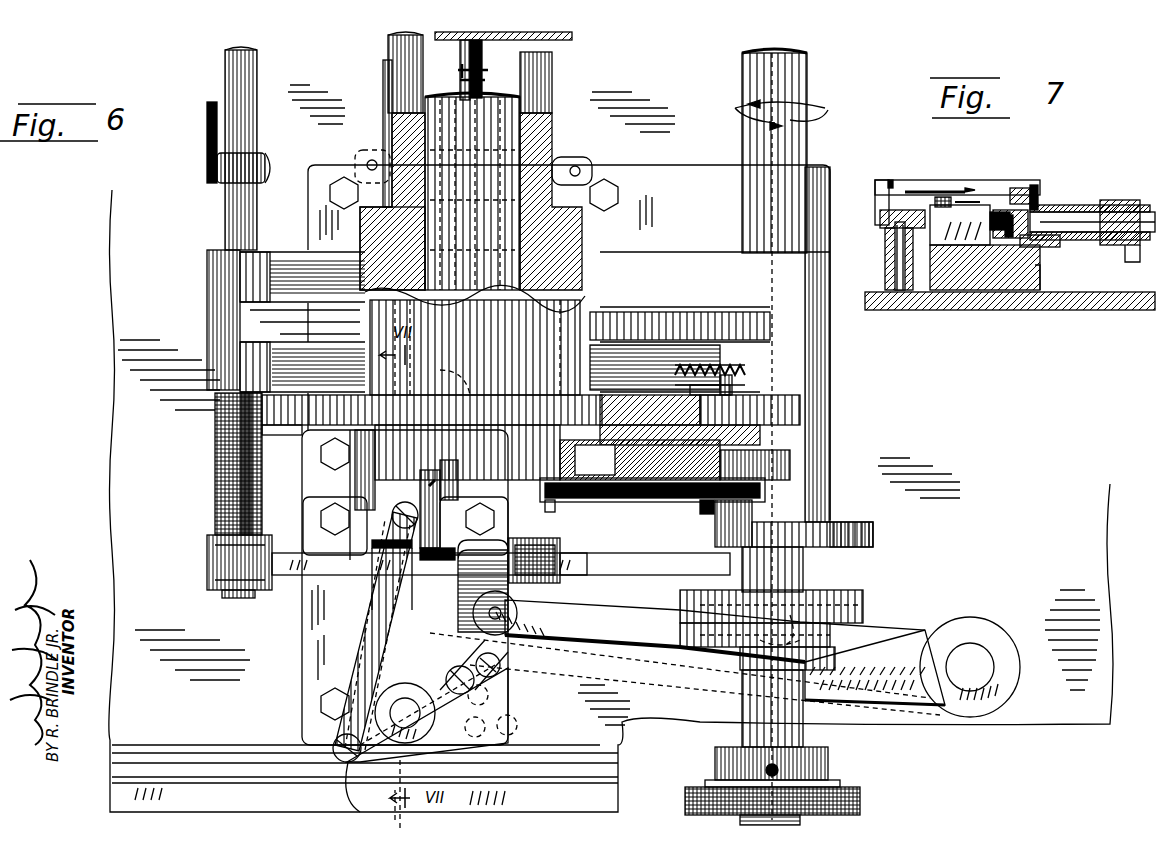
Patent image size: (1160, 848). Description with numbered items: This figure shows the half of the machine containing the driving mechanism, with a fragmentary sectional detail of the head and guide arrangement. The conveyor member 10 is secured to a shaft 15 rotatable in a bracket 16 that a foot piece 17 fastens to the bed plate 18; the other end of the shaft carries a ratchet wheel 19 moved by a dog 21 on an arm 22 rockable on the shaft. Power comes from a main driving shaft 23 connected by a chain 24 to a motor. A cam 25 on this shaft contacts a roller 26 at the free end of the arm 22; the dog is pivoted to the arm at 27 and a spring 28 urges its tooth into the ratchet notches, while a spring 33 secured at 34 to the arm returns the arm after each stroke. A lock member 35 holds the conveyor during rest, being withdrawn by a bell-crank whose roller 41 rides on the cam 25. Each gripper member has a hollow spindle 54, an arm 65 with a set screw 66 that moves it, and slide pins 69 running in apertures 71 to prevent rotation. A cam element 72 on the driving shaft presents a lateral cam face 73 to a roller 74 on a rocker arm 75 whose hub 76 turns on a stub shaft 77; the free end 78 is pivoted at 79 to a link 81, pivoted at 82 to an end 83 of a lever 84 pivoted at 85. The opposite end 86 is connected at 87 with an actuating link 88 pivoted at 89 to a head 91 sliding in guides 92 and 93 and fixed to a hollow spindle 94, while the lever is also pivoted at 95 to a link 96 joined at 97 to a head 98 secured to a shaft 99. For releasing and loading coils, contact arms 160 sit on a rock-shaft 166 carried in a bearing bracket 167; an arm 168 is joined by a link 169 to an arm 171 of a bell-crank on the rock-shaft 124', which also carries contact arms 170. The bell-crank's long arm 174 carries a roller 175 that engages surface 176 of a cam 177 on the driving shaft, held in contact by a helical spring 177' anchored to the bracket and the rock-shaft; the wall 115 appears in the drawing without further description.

In FIG. 6, the member of the conveyor 10 is at (572, 38).
In FIG. 6, the shaft 15 is at (495, 92).
In FIG. 6, the bracket 16 is at (585, 243).
In FIG. 6, the foot piece 17 is at (630, 296).
In FIG. 6, the bed plate 18 is at (180, 723).
In FIG. 7, the bed plate 18 is at (1104, 310).
In FIG. 6, the ratchet wheel 19 is at (298, 425).
In FIG. 6, the dog 21 is at (700, 410).
In FIG. 6, the arm 22 is at (760, 435).
In FIG. 6, the main driving shaft 23 is at (808, 105).
In FIG. 6, the chain 24 is at (860, 792).
In FIG. 6, the cam 25 is at (662, 462).
In FIG. 6, the roller 26 is at (775, 462).
In FIG. 6, the pivot 27 is at (730, 392).
In FIG. 6, the spring 28 is at (740, 360).
In FIG. 6, the spring 33 is at (640, 500).
In FIG. 6, the securing point 34 is at (704, 508).
In FIG. 6, the lock member 35 is at (460, 362).
In FIG. 6, the roller 41 is at (593, 500).
In FIG. 6, the hollow spindle 54 is at (484, 53).
In FIG. 6, the arm 65 is at (362, 150).
In FIG. 6, the set screw 66 is at (360, 226).
In FIG. 6, the slide pins 69 is at (464, 70).
In FIG. 6, the apertures 71 is at (460, 54).
In FIG. 6, the cam element 72 is at (860, 595).
In FIG. 6, the lateral cam face 73 is at (870, 632).
In FIG. 6, the cam follower roller 74 is at (790, 625).
In FIG. 6, the rocker arm 75 is at (910, 650).
In FIG. 6, the hub 76 is at (985, 627).
In FIG. 6, the stub shaft 77 is at (985, 660).
In FIG. 6, the free end of the arm 78 is at (550, 612).
In FIG. 6, the pivot 79 is at (512, 632).
In FIG. 6, the link 81 is at (500, 662).
In FIG. 6, the pivot 82 is at (508, 672).
In FIG. 6, the end of the lever 83 is at (508, 680).
In FIG. 6, the lever 84 is at (470, 730).
In FIG. 7, the lever 84 is at (880, 219).
In FIG. 6, the pivot 85 is at (405, 698).
In FIG. 7, the pivot 85 is at (897, 242).
In FIG. 6, the opposite end of the lever 86 is at (356, 786).
In FIG. 6, the pivot 87 is at (335, 745).
In FIG. 7, the pivot 87 is at (892, 180).
In FIG. 6, the actuating link 88 is at (355, 665).
In FIG. 7, the actuating link 88 is at (935, 190).
In FIG. 6, the pivot 89 is at (395, 508).
In FIG. 7, the pivot 89 is at (1028, 188).
In FIG. 6, the head 91 is at (432, 512).
In FIG. 7, the head 91 is at (1035, 255).
In FIG. 6, the guide 92 is at (458, 505).
In FIG. 6, the guide 93 is at (356, 514).
In FIG. 7, the guide 93 is at (975, 222).
In FIG. 6, the hollow spindle 94 is at (383, 75).
In FIG. 7, the hollow spindle 94 is at (1060, 205).
In FIG. 6, the pivot 95 is at (460, 666).
In FIG. 6, the link 96 is at (465, 605).
In FIG. 7, the link 96 is at (940, 197).
In FIG. 6, the pivot 97 is at (425, 548).
In FIG. 7, the pivot 97 is at (1000, 208).
In FIG. 6, the head 98 is at (373, 545).
In FIG. 7, the head 98 is at (1003, 235).
In FIG. 6, the shaft 99 is at (388, 37).
In FIG. 7, the shaft 99 is at (1088, 212).
In FIG. 6, the housing wall 115 is at (830, 325).
In FIG. 6, the rock-shaft 124' is at (559, 82).
In FIG. 6, the contact-arms 160 is at (208, 141).
In FIG. 6, the rock-shaft 166 is at (226, 58).
In FIG. 6, the bearing bracket 167 is at (208, 307).
In FIG. 7, the bearing bracket 167 is at (1128, 200).
In FIG. 6, the arm 168 is at (207, 546).
In FIG. 6, the link 169 is at (296, 576).
In FIG. 6, the contact arms 170 is at (560, 158).
In FIG. 6, the arm of the bell-crank 171 is at (530, 540).
In FIG. 6, the long arm of the bell-crank 174 is at (606, 553).
In FIG. 6, the roller 175 is at (718, 535).
In FIG. 6, the cam surface 176 is at (846, 522).
In FIG. 6, the cam 177 is at (866, 357).
In FIG. 6, the helical spring 177' is at (214, 464).